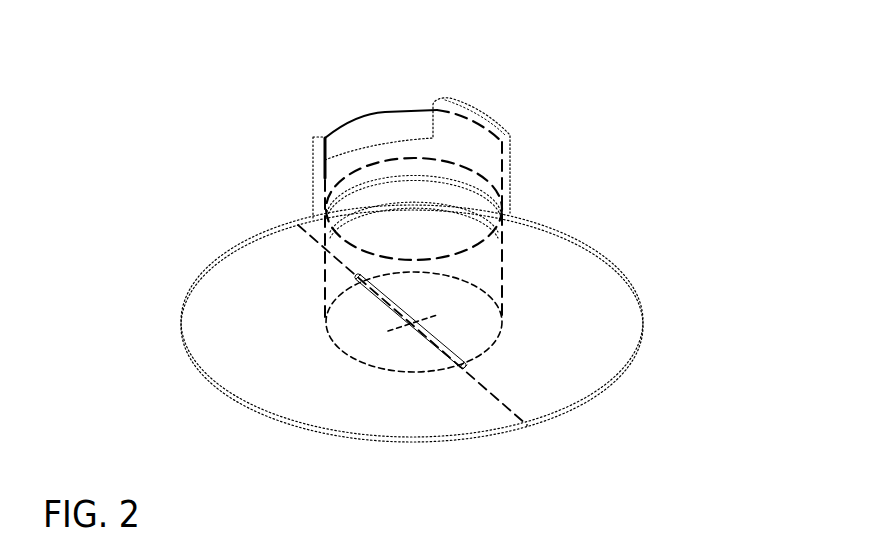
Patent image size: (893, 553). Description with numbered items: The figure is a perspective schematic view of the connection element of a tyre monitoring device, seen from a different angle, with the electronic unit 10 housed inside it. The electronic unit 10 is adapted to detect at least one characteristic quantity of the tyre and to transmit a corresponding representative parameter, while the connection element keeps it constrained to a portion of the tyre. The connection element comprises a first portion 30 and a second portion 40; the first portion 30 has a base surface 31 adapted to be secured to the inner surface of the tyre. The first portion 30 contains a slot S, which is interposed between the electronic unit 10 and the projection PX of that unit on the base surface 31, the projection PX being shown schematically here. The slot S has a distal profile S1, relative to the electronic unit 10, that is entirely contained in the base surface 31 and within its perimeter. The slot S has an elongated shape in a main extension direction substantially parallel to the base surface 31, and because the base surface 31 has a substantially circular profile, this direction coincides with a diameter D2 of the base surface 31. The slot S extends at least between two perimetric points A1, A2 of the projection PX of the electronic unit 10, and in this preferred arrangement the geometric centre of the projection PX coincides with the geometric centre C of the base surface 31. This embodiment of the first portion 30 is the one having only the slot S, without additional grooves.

The electronic unit 10 is at (383, 132).
The second portion 40 is at (520, 152).
The first portion 30 is at (592, 227).
The base surface 31 is at (605, 312).
The slot S is at (460, 335).
The distal profile S1 is at (420, 337).
The geometric centre C is at (410, 323).
The projection PX is at (343, 352).
The perimetric point A1 is at (348, 277).
The perimetric point A2 is at (467, 363).
The diameter D2 is at (324, 249).